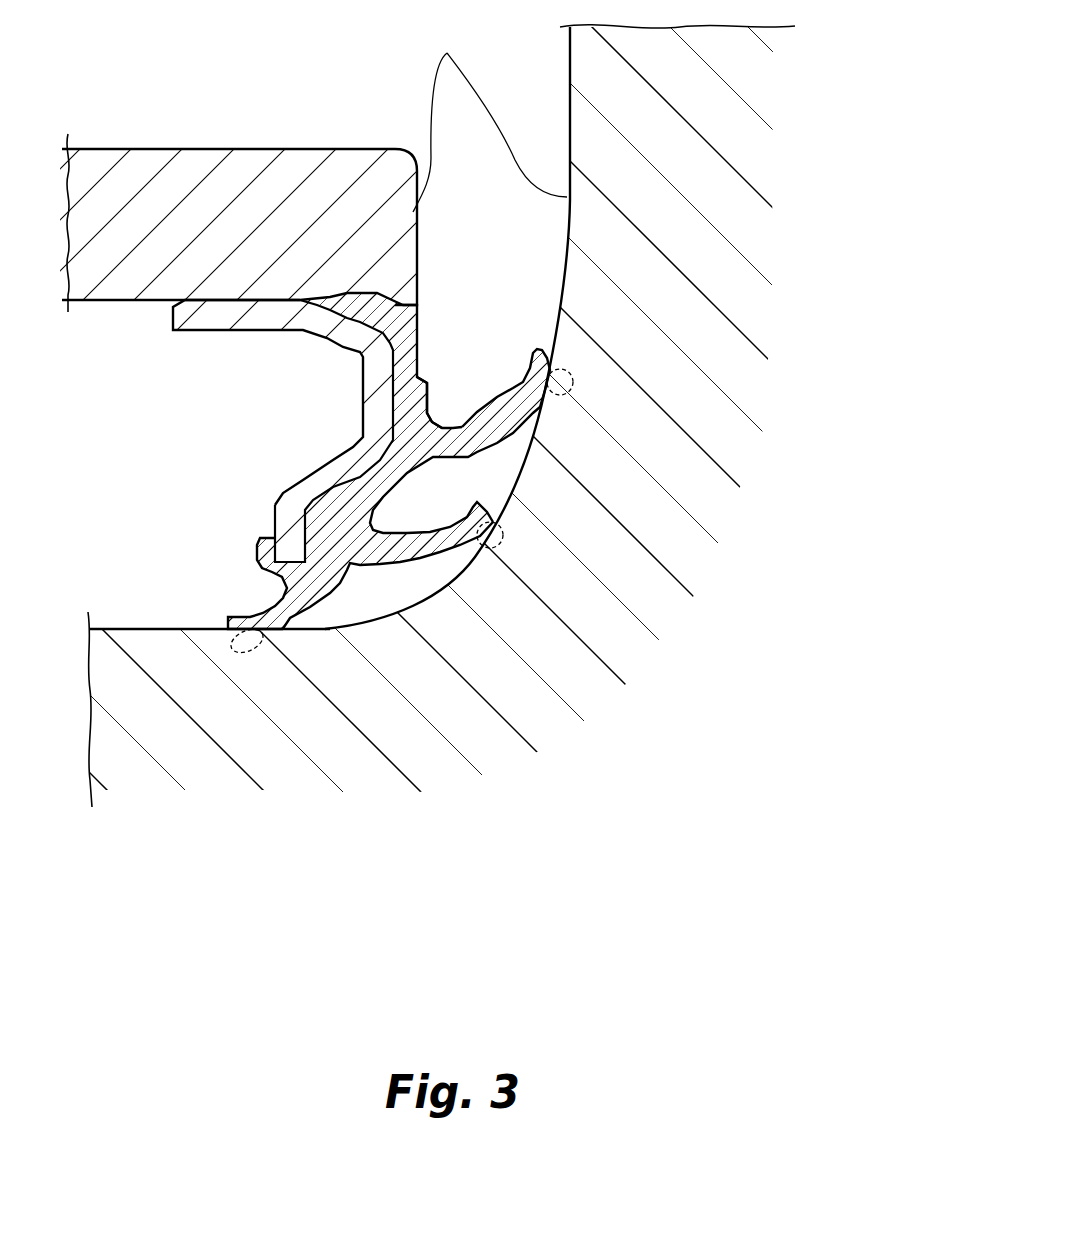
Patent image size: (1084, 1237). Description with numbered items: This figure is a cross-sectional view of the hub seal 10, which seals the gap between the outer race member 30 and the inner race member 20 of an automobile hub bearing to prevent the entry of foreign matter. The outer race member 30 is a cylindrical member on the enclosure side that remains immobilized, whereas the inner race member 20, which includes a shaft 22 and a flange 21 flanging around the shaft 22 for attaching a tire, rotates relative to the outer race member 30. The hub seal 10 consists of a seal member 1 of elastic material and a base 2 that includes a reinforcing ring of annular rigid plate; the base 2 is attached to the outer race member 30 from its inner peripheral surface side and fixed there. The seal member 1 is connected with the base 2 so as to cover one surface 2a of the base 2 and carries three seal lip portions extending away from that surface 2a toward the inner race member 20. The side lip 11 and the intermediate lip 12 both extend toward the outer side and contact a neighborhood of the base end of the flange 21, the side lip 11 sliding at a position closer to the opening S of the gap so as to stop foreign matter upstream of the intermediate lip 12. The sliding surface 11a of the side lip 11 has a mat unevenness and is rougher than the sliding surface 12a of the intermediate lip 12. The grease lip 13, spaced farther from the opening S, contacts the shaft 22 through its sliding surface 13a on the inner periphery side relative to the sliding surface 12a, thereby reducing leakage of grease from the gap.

The seal member 1 is at (420, 367).
The base 2 is at (250, 331).
The one surface of the base 2a is at (428, 391).
The hub seal 10 is at (462, 243).
The side lip 11 is at (494, 399).
The sliding surface of the side lip 11a is at (553, 357).
The intermediate lip 12 is at (427, 533).
The sliding surface of the intermediate lip 12a is at (493, 523).
The grease lip 13 is at (283, 610).
The sliding surface of the grease lip 13a is at (237, 628).
The inner race member 20 is at (542, 425).
The flange 21 is at (615, 97).
The shaft 22 is at (133, 712).
The outer race member 30 is at (151, 147).
The opening S is at (490, 117).